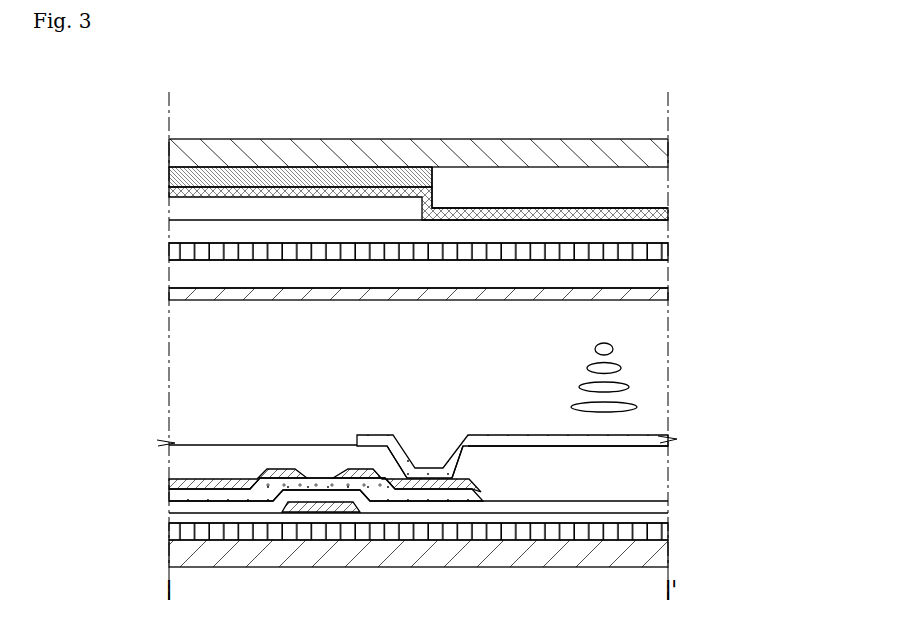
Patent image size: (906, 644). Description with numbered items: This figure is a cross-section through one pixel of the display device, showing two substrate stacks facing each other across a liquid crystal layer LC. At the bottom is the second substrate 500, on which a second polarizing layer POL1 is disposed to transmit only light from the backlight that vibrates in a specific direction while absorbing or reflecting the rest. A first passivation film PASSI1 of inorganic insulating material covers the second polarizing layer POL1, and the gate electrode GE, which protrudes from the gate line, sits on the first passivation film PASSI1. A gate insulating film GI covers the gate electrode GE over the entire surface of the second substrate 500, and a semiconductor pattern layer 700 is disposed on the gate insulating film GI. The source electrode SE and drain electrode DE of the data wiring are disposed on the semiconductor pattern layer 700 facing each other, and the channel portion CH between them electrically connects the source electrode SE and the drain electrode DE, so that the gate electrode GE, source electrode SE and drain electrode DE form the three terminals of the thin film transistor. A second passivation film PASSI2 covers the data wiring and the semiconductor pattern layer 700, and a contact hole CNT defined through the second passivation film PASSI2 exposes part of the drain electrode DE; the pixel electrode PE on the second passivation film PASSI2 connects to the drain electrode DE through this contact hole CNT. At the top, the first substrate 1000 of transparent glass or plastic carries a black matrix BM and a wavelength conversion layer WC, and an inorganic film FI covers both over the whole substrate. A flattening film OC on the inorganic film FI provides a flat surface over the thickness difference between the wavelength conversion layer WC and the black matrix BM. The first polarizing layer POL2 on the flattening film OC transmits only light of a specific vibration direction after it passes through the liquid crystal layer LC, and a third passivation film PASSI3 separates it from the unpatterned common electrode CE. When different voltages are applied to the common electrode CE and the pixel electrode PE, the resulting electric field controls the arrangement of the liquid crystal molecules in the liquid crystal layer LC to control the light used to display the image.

The first substrate 1000 is at (668, 156).
The black matrix BM is at (386, 176).
The wavelength conversion layer WC is at (668, 185).
The inorganic film FI is at (668, 210).
The flattening film OC is at (668, 233).
The first polarizing layer POL2 is at (171, 254).
The third passivation film PASSI3 is at (668, 267).
The common electrode CE is at (668, 295).
The liquid crystal layer LC is at (663, 375).
The pixel electrode PE is at (652, 438).
The second passivation film PASSI2 is at (668, 472).
The contact hole CNT is at (440, 456).
The channel portion CH is at (327, 473).
The source electrode SE is at (262, 484).
The drain electrode DE is at (380, 486).
The semiconductor pattern layer 700 is at (425, 496).
The gate electrode GE is at (320, 506).
The gate insulating film GI is at (605, 509).
The first passivation film PASSI1 is at (668, 512).
The second polarizing layer POL1 is at (668, 537).
The second substrate 500 is at (536, 555).